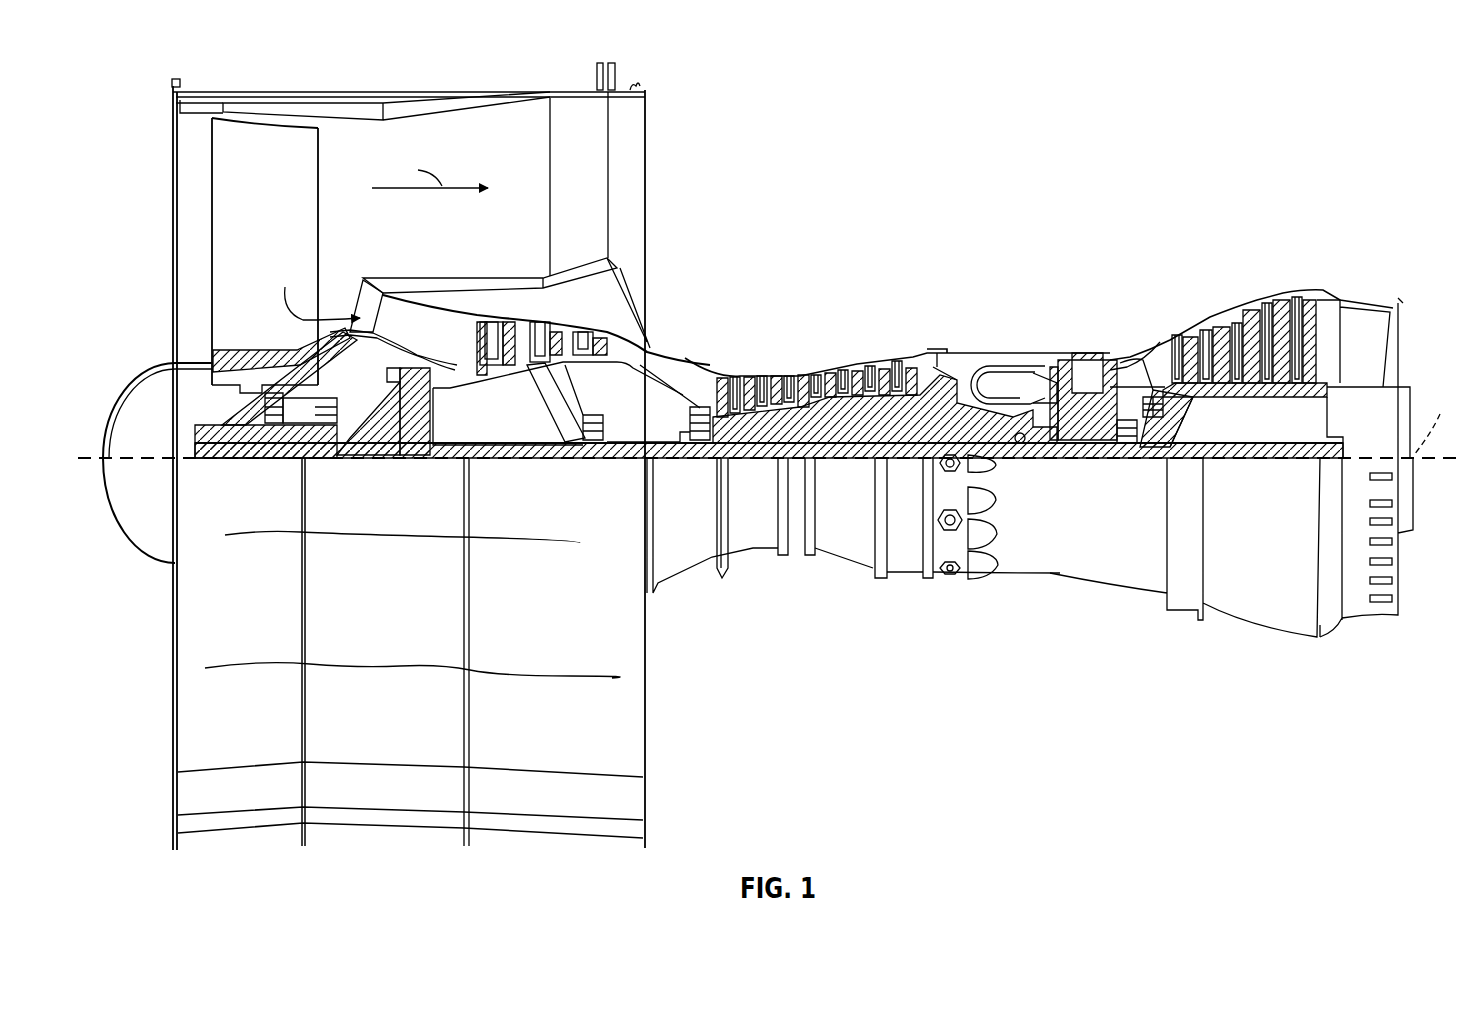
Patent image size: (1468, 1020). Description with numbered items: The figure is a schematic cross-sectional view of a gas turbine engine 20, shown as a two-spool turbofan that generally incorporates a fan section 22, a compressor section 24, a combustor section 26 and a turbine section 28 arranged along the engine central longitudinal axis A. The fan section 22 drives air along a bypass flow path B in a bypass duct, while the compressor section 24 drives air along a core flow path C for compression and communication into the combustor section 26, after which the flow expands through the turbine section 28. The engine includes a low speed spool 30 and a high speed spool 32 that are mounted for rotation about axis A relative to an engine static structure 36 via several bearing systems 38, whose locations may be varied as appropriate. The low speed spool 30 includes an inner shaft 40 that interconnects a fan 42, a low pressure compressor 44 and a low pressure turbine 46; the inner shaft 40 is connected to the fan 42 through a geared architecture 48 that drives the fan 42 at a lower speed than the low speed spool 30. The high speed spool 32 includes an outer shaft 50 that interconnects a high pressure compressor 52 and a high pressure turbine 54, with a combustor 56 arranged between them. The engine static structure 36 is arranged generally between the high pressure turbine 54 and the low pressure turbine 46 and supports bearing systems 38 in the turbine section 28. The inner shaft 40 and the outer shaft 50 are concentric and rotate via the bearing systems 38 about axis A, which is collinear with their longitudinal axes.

The gas turbine engine 20 is at (1222, 125).
The fan section 22 is at (445, 78).
The compressor section 24 is at (838, 318).
The combustor section 26 is at (1000, 318).
The turbine section 28 is at (1150, 297).
The low speed spool 30 is at (868, 465).
The high speed spool 32 is at (923, 400).
The engine static structure 36 is at (905, 577).
The bearing systems 38 is at (272, 428).
The inner shaft 40 is at (660, 462).
The fan 42 is at (287, 211).
The low pressure compressor 44 is at (560, 345).
The low pressure turbine 46 is at (1253, 315).
The geared architecture 48 is at (407, 432).
The outer shaft 50 is at (1033, 447).
The high pressure compressor 52 is at (827, 430).
The high pressure turbine 54 is at (1088, 357).
The combustor 56 is at (1010, 378).